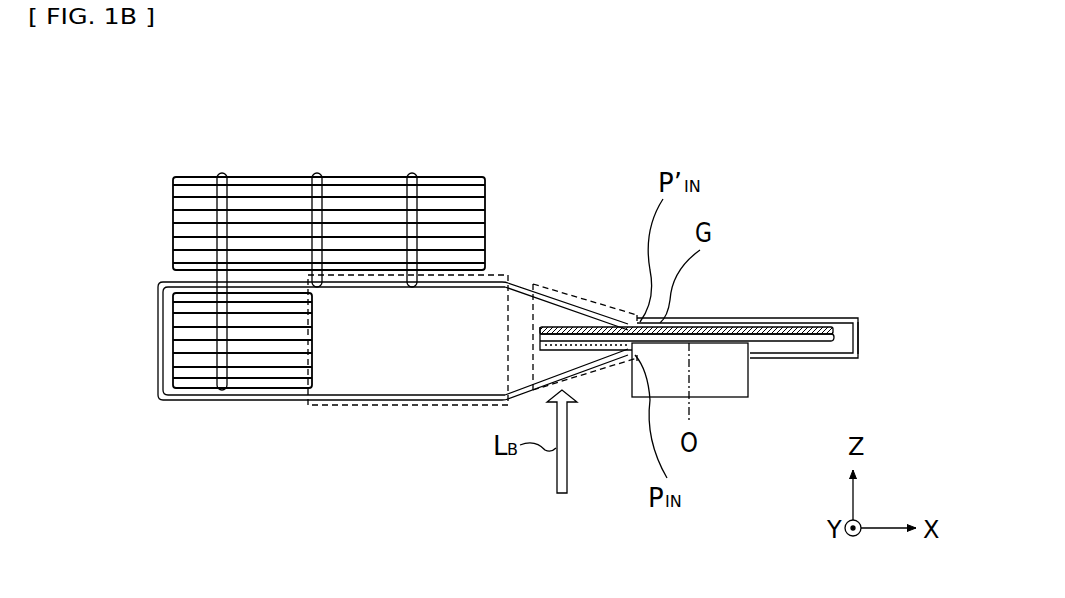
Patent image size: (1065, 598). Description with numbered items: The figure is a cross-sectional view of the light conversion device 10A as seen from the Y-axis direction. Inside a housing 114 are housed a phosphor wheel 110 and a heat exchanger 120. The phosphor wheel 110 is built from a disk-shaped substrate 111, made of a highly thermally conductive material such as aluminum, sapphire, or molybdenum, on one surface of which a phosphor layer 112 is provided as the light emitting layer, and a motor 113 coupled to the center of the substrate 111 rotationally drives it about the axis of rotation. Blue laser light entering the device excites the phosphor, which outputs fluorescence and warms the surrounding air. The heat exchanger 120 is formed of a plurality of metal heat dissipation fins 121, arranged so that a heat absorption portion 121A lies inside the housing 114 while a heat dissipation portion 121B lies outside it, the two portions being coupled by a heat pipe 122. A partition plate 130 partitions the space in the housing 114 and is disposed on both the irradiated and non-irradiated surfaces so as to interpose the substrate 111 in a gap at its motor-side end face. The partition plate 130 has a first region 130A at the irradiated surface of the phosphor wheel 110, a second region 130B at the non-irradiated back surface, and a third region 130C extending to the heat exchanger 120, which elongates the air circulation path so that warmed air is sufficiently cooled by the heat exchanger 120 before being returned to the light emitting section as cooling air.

The light conversion device 10A is at (778, 138).
The phosphor wheel 110 is at (834, 322).
The substrate 111 is at (860, 334).
The phosphor layer 112 is at (814, 339).
The motor 113 is at (738, 398).
The housing 114 is at (763, 317).
The heat exchanger 120 is at (443, 143).
The heat dissipation fins 121 is at (347, 176).
The heat absorption portion 121A is at (167, 340).
The heat dissipation portion 121B is at (173, 240).
The heat pipe 122 is at (222, 175).
The partition plate 130 is at (447, 360).
The first region 130A is at (603, 376).
The second region 130B is at (586, 290).
The third region 130C is at (352, 410).